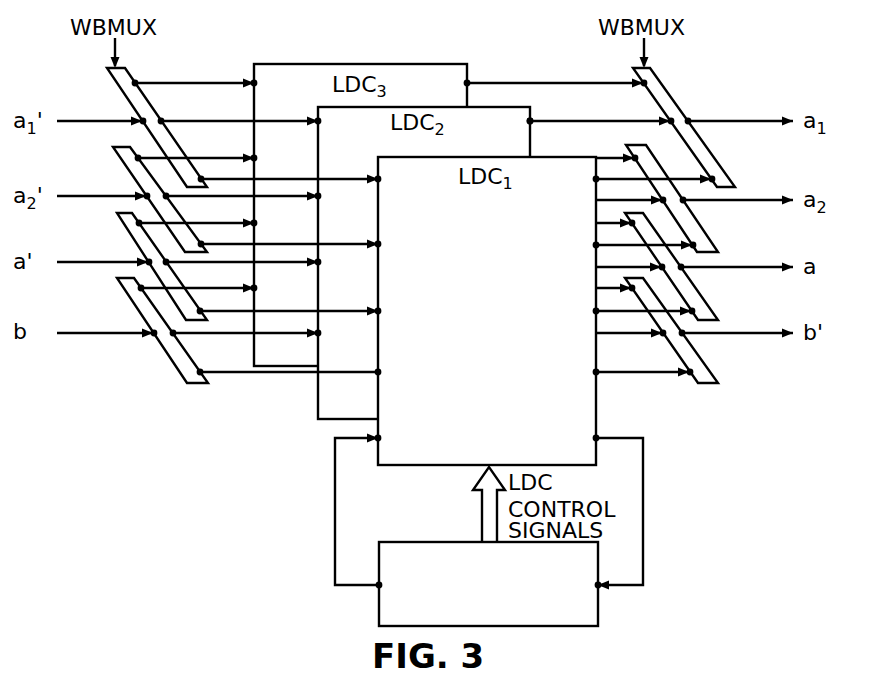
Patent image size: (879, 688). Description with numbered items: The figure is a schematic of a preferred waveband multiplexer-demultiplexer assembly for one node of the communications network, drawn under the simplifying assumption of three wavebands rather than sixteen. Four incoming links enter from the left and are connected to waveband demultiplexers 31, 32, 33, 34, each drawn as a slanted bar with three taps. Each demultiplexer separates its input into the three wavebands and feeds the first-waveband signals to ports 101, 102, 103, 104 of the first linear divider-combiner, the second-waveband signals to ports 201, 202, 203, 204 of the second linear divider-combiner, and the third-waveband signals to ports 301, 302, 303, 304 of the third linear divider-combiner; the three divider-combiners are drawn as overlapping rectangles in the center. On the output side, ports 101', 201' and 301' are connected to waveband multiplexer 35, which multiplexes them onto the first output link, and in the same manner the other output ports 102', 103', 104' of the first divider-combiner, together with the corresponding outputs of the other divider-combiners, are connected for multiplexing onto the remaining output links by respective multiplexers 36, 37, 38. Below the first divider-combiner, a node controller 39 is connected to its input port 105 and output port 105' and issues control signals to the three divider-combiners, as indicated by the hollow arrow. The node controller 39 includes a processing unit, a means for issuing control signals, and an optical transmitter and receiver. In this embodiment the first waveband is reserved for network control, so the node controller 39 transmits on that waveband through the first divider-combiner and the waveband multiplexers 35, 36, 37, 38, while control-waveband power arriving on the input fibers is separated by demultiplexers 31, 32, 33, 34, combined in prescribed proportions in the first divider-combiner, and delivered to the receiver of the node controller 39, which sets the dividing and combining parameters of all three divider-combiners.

The waveband demultiplexer 31 is at (125, 98).
The waveband demultiplexer 32 is at (132, 170).
The waveband demultiplexer 33 is at (133, 245).
The waveband demultiplexer 34 is at (133, 305).
The waveband multiplexer 35 is at (667, 88).
The waveband multiplexer 36 is at (702, 225).
The waveband multiplexer 37 is at (702, 290).
The waveband multiplexer 38 is at (702, 360).
The node controller 39 is at (418, 542).
The port of LDC1 101 is at (312, 180).
The port of LDC1 102 is at (312, 246).
The port of LDC1 103 is at (312, 312).
The port of LDC1 104 is at (312, 373).
The input port of LDC1 105 is at (381, 507).
The output port of LDC1 101' is at (630, 180).
The output port of LDC1 102' is at (620, 246).
The output port of LDC1 103' is at (620, 312).
The output port of LDC1 104' is at (619, 373).
The output port of LDC1 105' is at (592, 508).
The port of LDC2 201 is at (338, 122).
The port of LDC2 202 is at (338, 197).
The port of LDC2 203 is at (338, 264).
The port of LDC2 204 is at (338, 334).
The output port of LDC2 201' is at (507, 122).
The port of LDC3 301 is at (218, 84).
The port of LDC3 302 is at (219, 159).
The port of LDC3 303 is at (220, 224).
The port of LDC3 304 is at (221, 289).
The output port of LDC3 301' is at (532, 84).